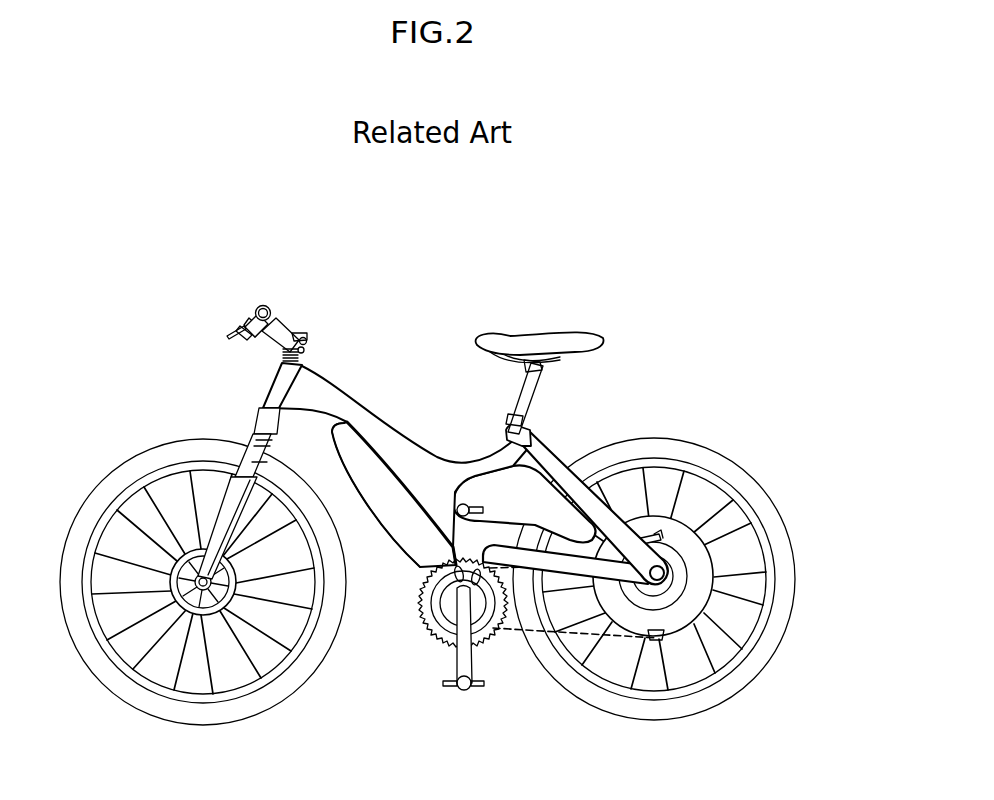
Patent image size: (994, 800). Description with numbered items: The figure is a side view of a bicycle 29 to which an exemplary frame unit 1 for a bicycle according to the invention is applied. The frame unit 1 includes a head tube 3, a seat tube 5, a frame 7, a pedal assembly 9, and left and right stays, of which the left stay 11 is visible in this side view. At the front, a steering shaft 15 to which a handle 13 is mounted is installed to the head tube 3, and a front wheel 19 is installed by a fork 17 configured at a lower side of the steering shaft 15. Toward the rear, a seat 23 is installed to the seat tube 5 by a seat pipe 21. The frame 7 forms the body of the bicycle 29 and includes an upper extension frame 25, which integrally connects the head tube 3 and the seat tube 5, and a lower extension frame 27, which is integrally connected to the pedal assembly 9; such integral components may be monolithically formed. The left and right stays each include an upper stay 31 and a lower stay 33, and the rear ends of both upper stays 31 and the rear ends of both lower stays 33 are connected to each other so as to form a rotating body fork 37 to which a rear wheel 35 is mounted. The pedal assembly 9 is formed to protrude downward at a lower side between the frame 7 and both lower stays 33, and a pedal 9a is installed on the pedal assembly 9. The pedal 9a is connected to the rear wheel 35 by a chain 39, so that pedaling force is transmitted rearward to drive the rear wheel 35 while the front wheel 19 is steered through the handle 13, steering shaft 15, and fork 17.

The frame unit 1 is at (420, 370).
The head tube 3 is at (278, 387).
The seat tube 5 is at (507, 434).
The frame 7 is at (355, 392).
The pedal assembly 9 is at (455, 592).
The pedal 9a is at (458, 690).
The left stay 11 is at (562, 458).
The handle 13 is at (281, 333).
The steering shaft 15 is at (285, 360).
The fork 17 is at (220, 515).
The front wheel 19 is at (158, 705).
The seat pipe 21 is at (514, 415).
The seat 23 is at (552, 345).
The upper extension frame 25 is at (470, 458).
The lower extension frame 27 is at (447, 513).
The bicycle 29 is at (697, 384).
The upper stay 31 is at (537, 465).
The lower stay 33 is at (565, 548).
The rear wheel 35 is at (722, 692).
The rotating body fork 37 is at (658, 572).
The chain 39 is at (625, 633).